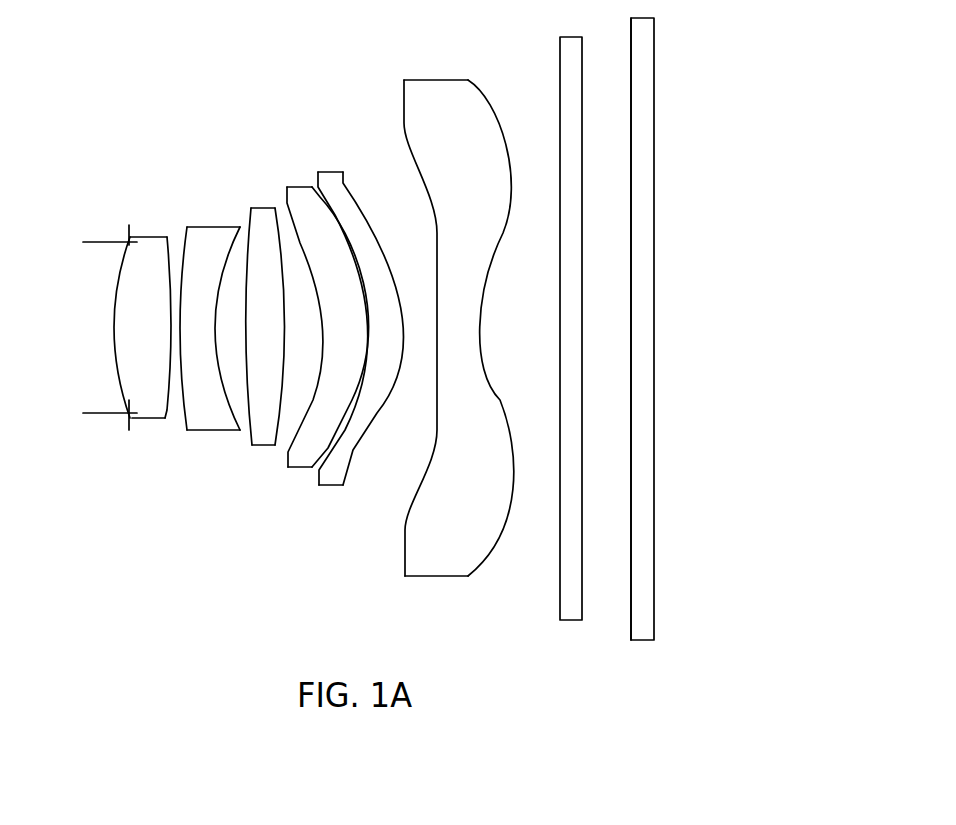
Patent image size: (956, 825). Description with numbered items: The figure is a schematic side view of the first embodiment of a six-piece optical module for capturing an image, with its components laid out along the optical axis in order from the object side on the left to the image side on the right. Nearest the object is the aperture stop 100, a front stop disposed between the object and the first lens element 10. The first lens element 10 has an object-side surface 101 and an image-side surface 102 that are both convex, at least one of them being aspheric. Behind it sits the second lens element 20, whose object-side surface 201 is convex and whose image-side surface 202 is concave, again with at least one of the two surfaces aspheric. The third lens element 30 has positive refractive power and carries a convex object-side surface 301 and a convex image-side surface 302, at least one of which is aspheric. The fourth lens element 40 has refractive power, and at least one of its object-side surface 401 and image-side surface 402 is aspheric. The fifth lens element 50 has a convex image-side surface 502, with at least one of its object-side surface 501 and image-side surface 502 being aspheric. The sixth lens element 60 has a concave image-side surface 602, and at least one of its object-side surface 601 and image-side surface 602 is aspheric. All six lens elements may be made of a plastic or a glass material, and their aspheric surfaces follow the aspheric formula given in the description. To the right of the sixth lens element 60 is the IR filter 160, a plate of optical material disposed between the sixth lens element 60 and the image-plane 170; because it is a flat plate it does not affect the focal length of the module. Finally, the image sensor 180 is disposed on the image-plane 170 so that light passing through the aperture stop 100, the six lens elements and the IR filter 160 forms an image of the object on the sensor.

The aperture stop 100 is at (98, 242).
The first lens element 10 is at (108, 338).
The object-side surface of the first lens element 101 is at (124, 400).
The image-side surface of the first lens element 102 is at (163, 400).
The second lens element 20 is at (176, 339).
The object-side surface of the second lens element 201 is at (187, 430).
The image-side surface of the second lens element 202 is at (238, 430).
The third lens element 30 is at (232, 338).
The object-side surface of the third lens element 301 is at (249, 438).
The image-side surface of the third lens element 302 is at (277, 432).
The fourth lens element 40 is at (309, 339).
The object-side surface of the fourth lens element 401 is at (297, 435).
The image-side surface of the fourth lens element 402 is at (330, 447).
The fifth lens element 50 is at (371, 338).
The object-side surface of the fifth lens element 501 is at (353, 450).
The image-side surface of the fifth lens element 502 is at (377, 413).
The sixth lens element 60 is at (467, 338).
The object-side surface of the sixth lens element 601 is at (410, 517).
The image-side surface of the sixth lens element 602 is at (493, 547).
The IR filter 160 is at (570, 620).
The image-plane 170 is at (631, 80).
The image sensor 180 is at (654, 163).